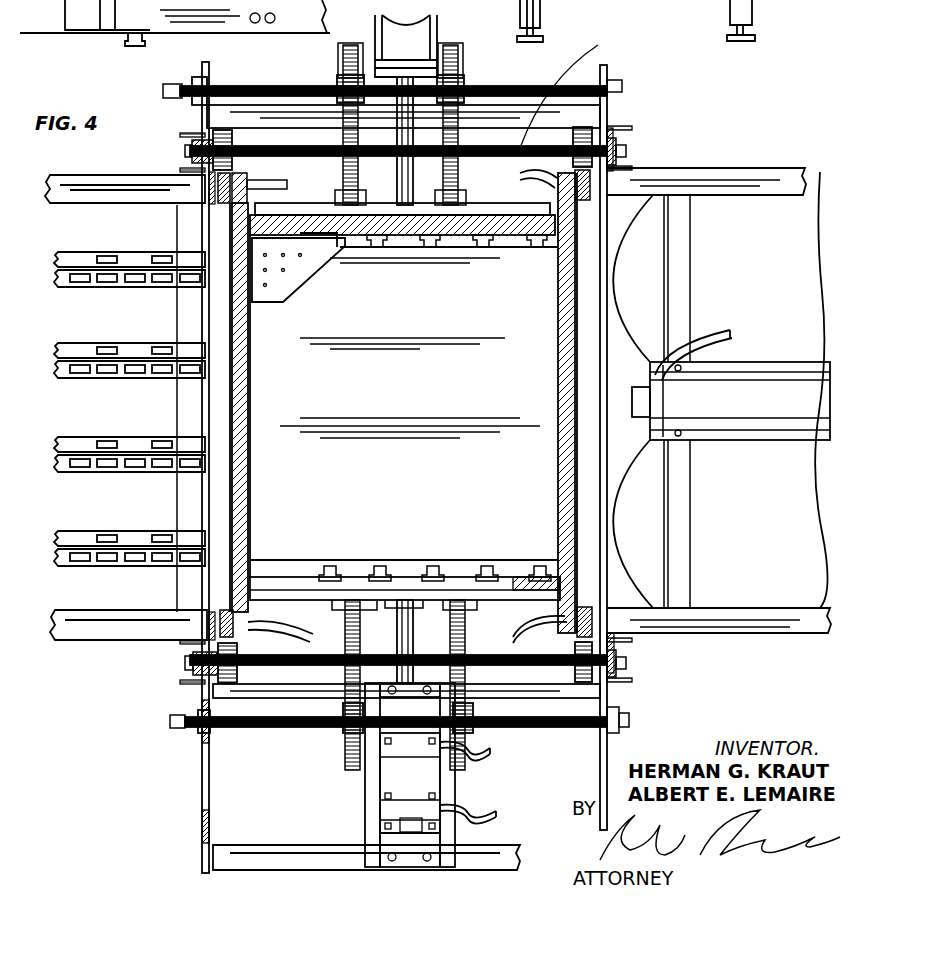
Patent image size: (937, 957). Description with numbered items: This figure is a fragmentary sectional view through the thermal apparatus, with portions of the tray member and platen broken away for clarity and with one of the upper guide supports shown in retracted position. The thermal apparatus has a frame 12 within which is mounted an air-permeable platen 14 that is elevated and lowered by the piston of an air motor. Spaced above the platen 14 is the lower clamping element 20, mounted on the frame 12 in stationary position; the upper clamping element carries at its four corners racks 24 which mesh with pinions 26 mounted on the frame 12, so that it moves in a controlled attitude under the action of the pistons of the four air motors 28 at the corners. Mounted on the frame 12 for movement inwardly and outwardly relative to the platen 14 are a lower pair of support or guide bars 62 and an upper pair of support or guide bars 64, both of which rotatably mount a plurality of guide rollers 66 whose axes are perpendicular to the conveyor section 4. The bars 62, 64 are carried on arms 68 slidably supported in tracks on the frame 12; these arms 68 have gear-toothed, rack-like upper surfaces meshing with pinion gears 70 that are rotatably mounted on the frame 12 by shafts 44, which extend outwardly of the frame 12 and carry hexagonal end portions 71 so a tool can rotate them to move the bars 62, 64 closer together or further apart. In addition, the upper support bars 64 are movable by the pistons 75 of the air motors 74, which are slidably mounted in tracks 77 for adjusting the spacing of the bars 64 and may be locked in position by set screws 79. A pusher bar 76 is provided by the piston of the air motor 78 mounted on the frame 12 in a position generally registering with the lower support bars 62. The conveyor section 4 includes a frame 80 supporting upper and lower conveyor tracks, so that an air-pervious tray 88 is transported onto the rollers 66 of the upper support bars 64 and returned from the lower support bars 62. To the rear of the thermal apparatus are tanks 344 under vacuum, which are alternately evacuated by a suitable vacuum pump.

The conveyor section 4 is at (75, 343).
The frame 12 is at (612, 133).
The air-permeable platen 14 is at (420, 394).
The lower clamping element 20 is at (558, 290).
The racks 24 is at (207, 205).
The pinions 26 is at (232, 135).
The air motors 28 is at (248, 175).
The shafts 44 is at (305, 90).
The lower support or guide bars 62 is at (410, 577).
The upper support or guide bars 64 is at (507, 232).
The guide rollers 66 is at (437, 240).
The arms 68 is at (452, 640).
The pinion gears 70 is at (340, 80).
The hexagonal end portions 71 is at (170, 728).
The air motors 74 is at (400, 48).
The pistons 75 is at (415, 108).
The pusher bar 76 is at (637, 390).
The tracks 77 is at (372, 842).
The air motor 78 is at (745, 375).
The set screws 79 is at (413, 830).
The frame 80 is at (177, 410).
The air-pervious tray 88 is at (292, 286).
The tanks 344 is at (762, 265).